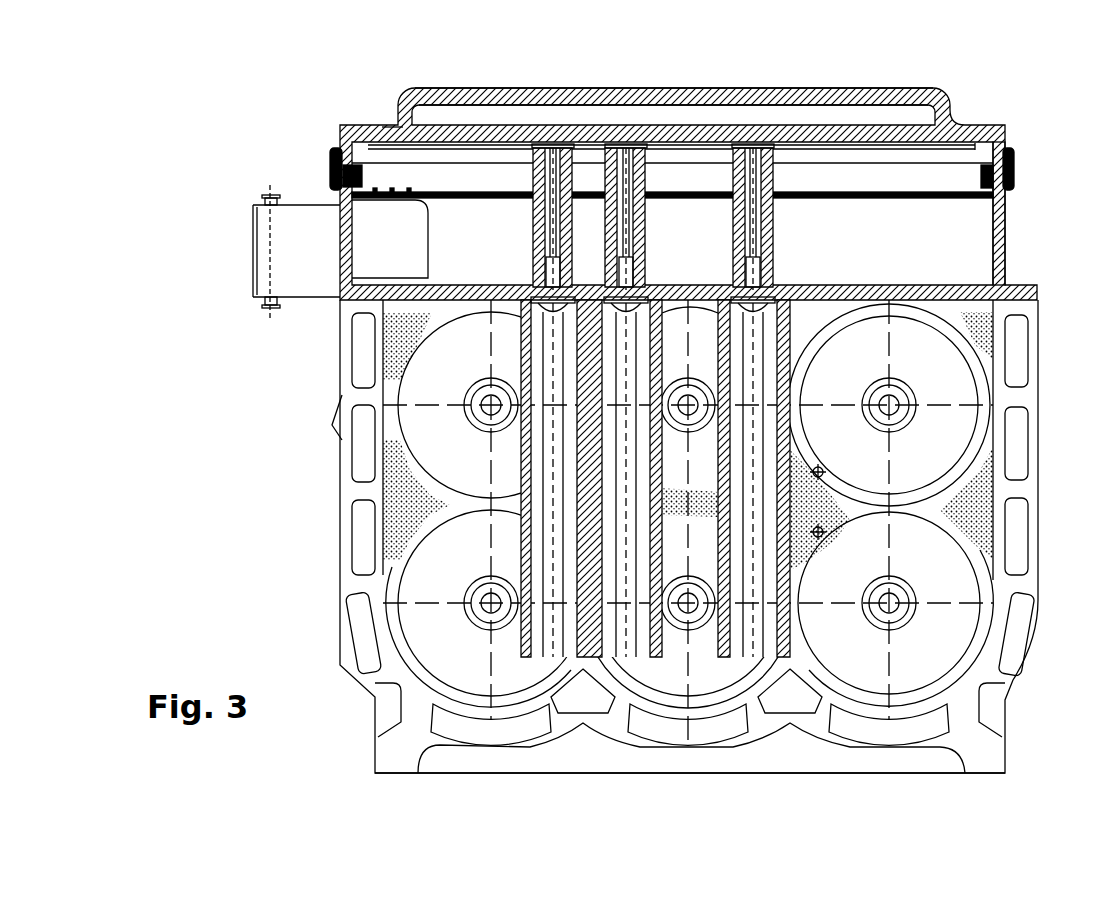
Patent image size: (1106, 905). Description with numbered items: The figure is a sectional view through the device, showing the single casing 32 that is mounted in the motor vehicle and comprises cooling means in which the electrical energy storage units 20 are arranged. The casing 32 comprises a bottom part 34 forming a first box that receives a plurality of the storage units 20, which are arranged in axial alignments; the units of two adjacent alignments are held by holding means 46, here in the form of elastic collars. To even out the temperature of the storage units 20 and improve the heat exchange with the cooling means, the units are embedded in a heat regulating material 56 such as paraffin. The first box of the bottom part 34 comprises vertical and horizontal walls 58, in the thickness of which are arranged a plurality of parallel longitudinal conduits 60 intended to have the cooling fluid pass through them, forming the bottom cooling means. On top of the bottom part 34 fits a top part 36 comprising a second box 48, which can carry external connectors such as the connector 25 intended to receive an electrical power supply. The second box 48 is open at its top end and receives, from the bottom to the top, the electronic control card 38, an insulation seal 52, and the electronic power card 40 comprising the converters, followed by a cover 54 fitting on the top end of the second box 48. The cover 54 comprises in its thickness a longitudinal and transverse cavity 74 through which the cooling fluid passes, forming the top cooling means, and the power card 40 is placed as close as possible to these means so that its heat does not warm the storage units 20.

The electrical energy storage unit 20 is at (695, 506).
The connector 25 is at (272, 276).
The casing 32 is at (1040, 444).
The bottom part 34 is at (667, 774).
The top part 36 is at (848, 88).
The electronic control card 38 is at (454, 200).
The electronic power card 40 is at (380, 127).
The holding means 46 is at (437, 690).
The second box 48 is at (980, 232).
The insulation seal 52 is at (332, 167).
The cover 54 is at (713, 87).
The heat regulating material 56 is at (378, 545).
The vertical and horizontal walls 58 is at (348, 486).
The longitudinal conduits 60 is at (362, 628).
The longitudinal and transverse cavity 74 is at (655, 118).